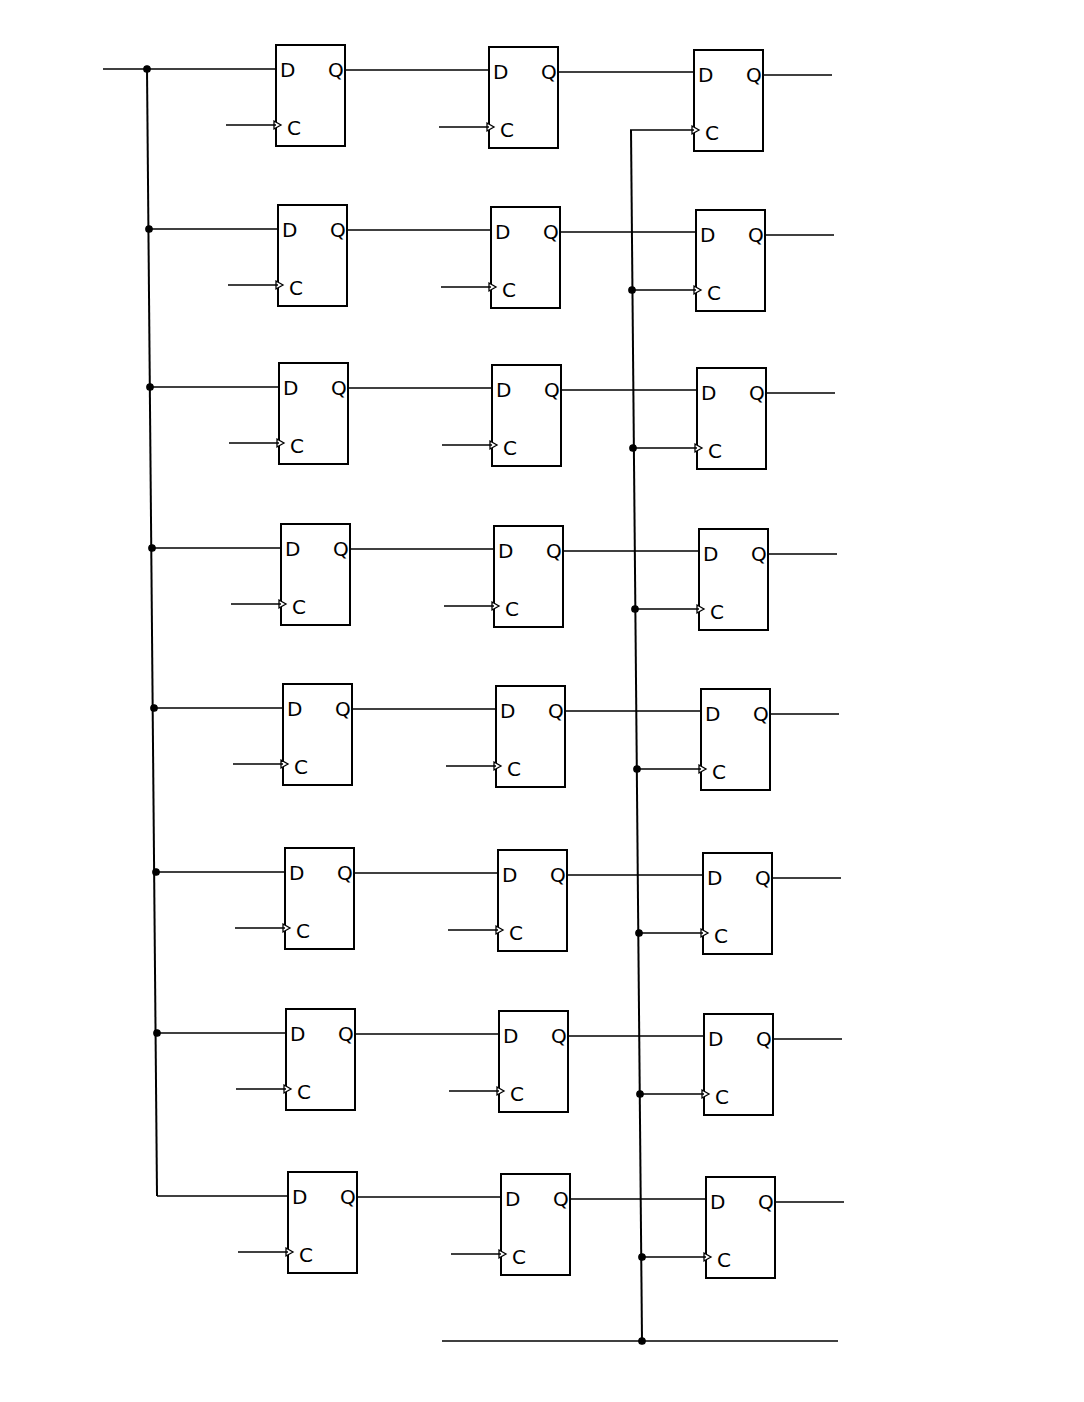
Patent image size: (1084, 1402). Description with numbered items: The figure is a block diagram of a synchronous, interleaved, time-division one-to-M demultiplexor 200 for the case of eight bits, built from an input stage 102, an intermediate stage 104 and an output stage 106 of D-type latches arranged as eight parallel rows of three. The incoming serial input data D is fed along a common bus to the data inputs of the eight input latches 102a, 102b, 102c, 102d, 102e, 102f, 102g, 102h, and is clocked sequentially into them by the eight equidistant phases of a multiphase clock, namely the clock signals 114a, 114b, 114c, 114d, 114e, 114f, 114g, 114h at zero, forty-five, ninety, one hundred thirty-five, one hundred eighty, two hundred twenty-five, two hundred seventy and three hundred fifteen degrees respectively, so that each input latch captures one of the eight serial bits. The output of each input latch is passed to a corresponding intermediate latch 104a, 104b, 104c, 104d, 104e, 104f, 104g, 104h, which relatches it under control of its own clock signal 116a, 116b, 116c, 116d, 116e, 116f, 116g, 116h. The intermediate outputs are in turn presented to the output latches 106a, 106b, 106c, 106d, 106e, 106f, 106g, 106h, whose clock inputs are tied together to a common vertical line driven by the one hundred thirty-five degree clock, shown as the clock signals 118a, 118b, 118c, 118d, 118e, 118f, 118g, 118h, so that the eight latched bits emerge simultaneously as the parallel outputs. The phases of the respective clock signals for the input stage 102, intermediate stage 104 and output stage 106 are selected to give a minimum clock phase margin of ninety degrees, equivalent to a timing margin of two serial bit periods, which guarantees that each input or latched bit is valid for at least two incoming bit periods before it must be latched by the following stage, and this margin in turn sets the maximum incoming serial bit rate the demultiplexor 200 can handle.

The interleaved time-division 1:M demultiplexor 200 is at (183, 1265).
The input stage of latches 102 is at (334, 0).
The intermediate stage of latches 104 is at (556, 1).
The output stage of latches 106 is at (765, 5).
The input latch 102a is at (305, 98).
The input latch 102b is at (319, 277).
The input latch 102c is at (319, 435).
The input latch 102d is at (322, 596).
The input latch 102e is at (324, 756).
The input latch 102f is at (325, 920).
The input latch 102g is at (327, 1081).
The input latch 102h is at (329, 1244).
The intermediate latch 104a is at (515, 103).
The intermediate latch 104b is at (528, 279).
The intermediate latch 104c is at (528, 437).
The intermediate latch 104d is at (531, 598).
The intermediate latch 104e is at (533, 758).
The intermediate latch 104f is at (534, 922).
The intermediate latch 104g is at (536, 1083).
The intermediate latch 104h is at (538, 1246).
The output latch 106a is at (740, 106).
The output latch 106b is at (743, 281).
The output latch 106c is at (743, 439).
The output latch 106d is at (746, 600).
The output latch 106e is at (748, 760).
The output latch 106f is at (749, 924).
The output latch 106g is at (751, 1085).
The output latch 106h is at (753, 1248).
The clock signal 114a is at (241, 152).
The clock signal 114b is at (237, 312).
The clock signal 114c is at (238, 470).
The clock signal 114d is at (235, 631).
The clock signal 114e is at (237, 791).
The clock signal 114f is at (238, 955).
The clock signal 114g is at (240, 1116).
The clock signal 114h is at (242, 1279).
The clock signal 116a is at (462, 83).
The clock signal 116b is at (442, 274).
The clock signal 116c is at (443, 432).
The clock signal 116d is at (445, 593).
The clock signal 116e is at (447, 753).
The clock signal 116f is at (460, 917).
The clock signal 116g is at (461, 1078).
The clock signal 116h is at (457, 1241).
The clock signal 118a is at (665, 161).
The clock signal 118b is at (666, 319).
The clock signal 118c is at (666, 477).
The clock signal 118d is at (669, 638).
The clock signal 118e is at (671, 798).
The clock signal 118f is at (672, 962).
The clock signal 118g is at (674, 1123).
The clock signal 118h is at (676, 1286).